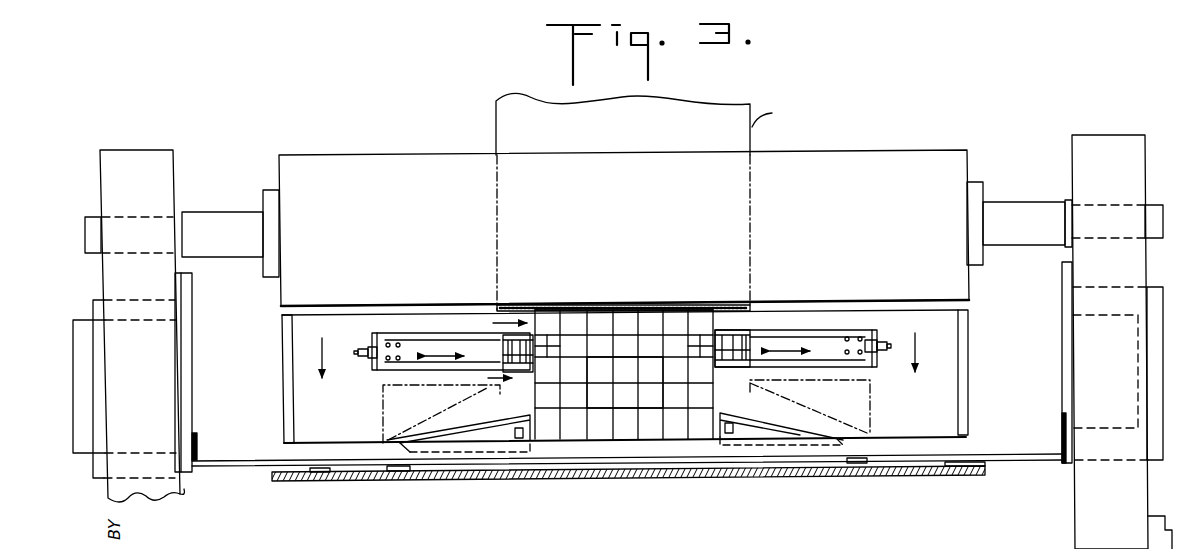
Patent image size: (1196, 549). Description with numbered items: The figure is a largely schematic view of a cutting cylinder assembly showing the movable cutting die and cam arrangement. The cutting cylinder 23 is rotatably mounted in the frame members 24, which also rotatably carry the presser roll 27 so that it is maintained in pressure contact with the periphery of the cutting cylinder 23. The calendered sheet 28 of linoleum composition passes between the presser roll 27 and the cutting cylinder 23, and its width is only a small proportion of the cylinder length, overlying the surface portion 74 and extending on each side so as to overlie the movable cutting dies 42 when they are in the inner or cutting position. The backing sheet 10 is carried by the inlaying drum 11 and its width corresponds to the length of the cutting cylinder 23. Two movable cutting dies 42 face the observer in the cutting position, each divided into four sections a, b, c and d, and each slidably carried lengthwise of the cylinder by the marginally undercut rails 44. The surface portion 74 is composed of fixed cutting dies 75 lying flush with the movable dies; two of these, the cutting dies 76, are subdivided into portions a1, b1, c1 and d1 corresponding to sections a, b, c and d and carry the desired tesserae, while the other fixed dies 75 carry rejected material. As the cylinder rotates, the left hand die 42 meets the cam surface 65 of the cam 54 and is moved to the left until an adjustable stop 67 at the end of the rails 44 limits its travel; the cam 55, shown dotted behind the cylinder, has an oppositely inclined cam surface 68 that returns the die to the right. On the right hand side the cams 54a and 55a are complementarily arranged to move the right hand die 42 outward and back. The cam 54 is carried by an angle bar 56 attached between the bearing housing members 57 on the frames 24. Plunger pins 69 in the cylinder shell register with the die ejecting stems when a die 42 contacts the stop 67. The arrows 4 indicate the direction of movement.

The direction arrow 4 is at (499, 351).
The backing sheet 10 is at (330, 472).
The inlaying drum 11 is at (408, 480).
The cutting cylinder 23 is at (968, 410).
The frame members 24 is at (178, 493).
The presser roll 27 is at (935, 152).
The calendered sheet 28 is at (496, 128).
The movable cutting die 42 is at (495, 348).
The marginally undercut rails 44 is at (412, 333).
The cam 54 is at (500, 432).
The cam 54a is at (745, 437).
The cam 55 is at (383, 412).
The cam 55a is at (870, 407).
The angle bar 56 is at (885, 447).
The bearing housing members 57 is at (192, 470).
The cam surface 65 is at (515, 422).
The adjustable stop 67 is at (358, 352).
The cam surface 68 is at (458, 415).
The plunger pins 69 is at (372, 368).
The surface portion of cutting cylinder 74 is at (600, 422).
The fixed cutting dies 75 is at (652, 440).
The cutting dies 76 is at (557, 335).
The cutting die section a is at (537, 333).
The cutting die portion a1 is at (557, 345).
The cutting die section b is at (520, 375).
The cutting die portion b1 is at (563, 352).
The cutting die section c is at (500, 392).
The cutting die portion c1 is at (551, 373).
The cutting die section d is at (497, 340).
The cutting die portion d1 is at (548, 335).